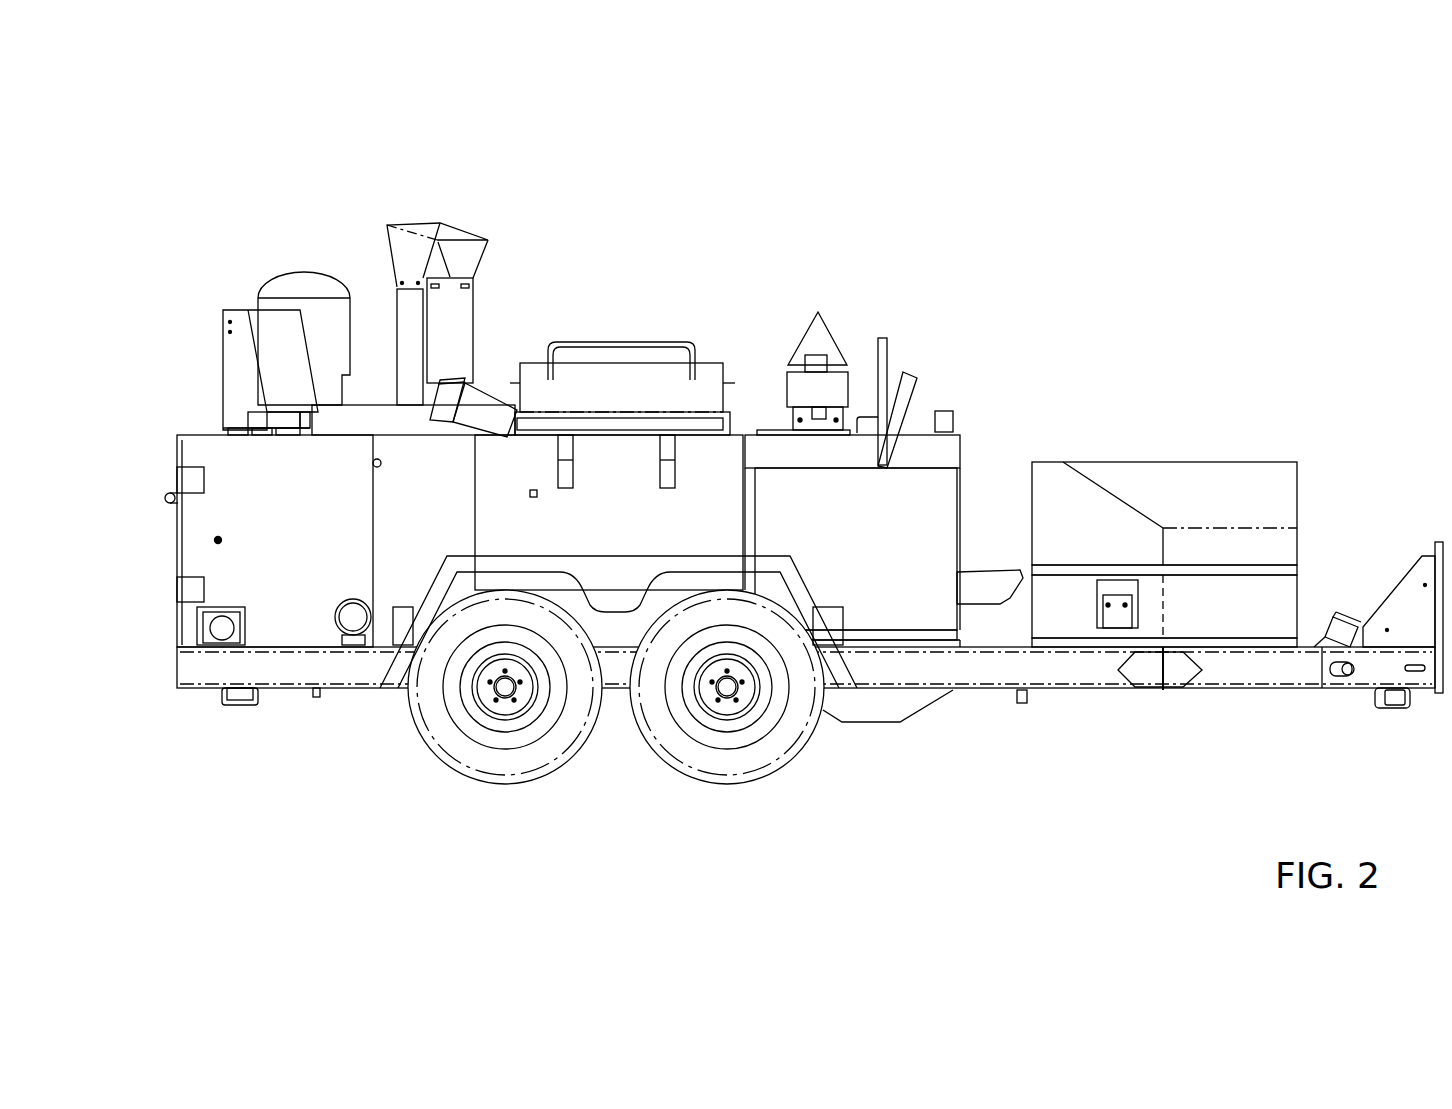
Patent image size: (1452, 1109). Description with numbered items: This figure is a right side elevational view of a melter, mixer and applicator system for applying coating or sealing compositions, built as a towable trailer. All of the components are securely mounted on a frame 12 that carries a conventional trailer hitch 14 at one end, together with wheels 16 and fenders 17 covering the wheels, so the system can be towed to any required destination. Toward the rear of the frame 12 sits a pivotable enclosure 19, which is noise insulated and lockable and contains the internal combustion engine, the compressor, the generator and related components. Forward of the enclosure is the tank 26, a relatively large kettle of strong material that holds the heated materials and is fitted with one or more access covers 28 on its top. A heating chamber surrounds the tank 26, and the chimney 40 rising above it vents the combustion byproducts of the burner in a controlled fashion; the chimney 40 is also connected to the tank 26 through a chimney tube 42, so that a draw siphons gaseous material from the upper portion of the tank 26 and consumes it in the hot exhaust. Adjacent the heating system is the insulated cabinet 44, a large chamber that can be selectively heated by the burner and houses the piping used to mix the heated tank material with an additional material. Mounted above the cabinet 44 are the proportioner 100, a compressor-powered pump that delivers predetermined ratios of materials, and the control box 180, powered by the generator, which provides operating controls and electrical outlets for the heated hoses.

The frame 12 is at (1290, 684).
The trailer hitch 14 is at (1420, 728).
The wheels 16 is at (440, 747).
The fenders 17 is at (628, 596).
The pivotable enclosure 19 is at (1240, 499).
The tank 26 is at (634, 512).
The access covers 28 is at (628, 397).
The chimney 40 is at (457, 295).
The chimney tube 42 is at (473, 407).
The insulated cabinet 44 is at (309, 540).
The proportioner 100 is at (304, 338).
The control box 180 is at (308, 373).